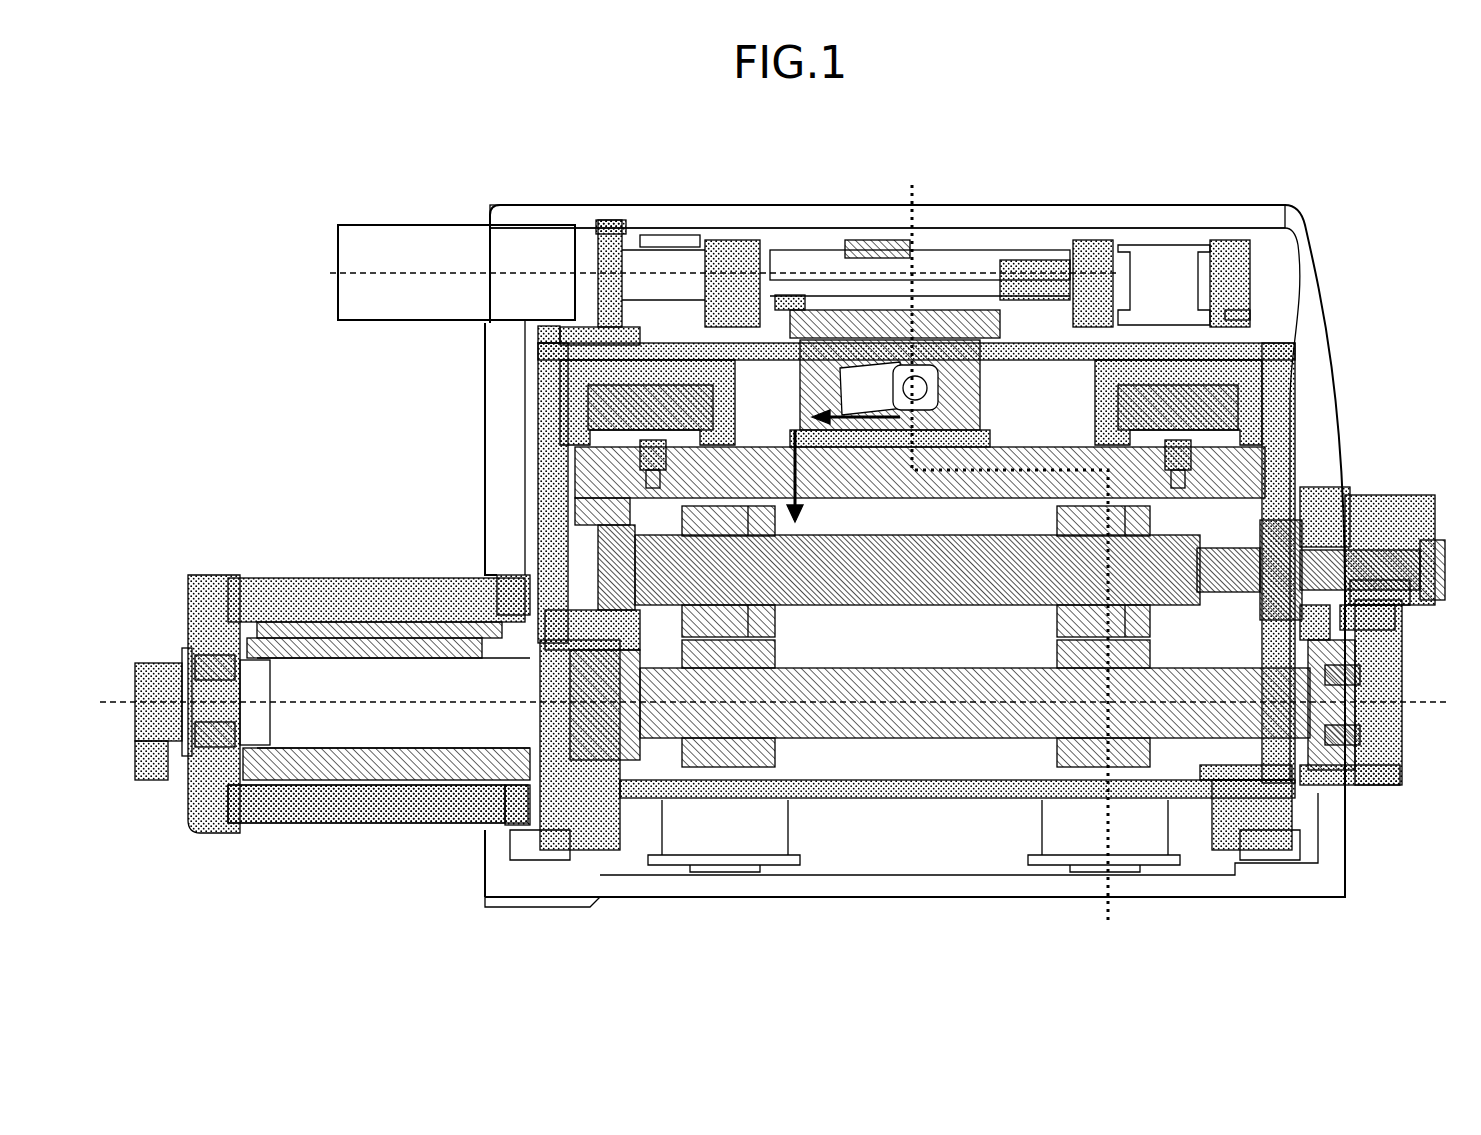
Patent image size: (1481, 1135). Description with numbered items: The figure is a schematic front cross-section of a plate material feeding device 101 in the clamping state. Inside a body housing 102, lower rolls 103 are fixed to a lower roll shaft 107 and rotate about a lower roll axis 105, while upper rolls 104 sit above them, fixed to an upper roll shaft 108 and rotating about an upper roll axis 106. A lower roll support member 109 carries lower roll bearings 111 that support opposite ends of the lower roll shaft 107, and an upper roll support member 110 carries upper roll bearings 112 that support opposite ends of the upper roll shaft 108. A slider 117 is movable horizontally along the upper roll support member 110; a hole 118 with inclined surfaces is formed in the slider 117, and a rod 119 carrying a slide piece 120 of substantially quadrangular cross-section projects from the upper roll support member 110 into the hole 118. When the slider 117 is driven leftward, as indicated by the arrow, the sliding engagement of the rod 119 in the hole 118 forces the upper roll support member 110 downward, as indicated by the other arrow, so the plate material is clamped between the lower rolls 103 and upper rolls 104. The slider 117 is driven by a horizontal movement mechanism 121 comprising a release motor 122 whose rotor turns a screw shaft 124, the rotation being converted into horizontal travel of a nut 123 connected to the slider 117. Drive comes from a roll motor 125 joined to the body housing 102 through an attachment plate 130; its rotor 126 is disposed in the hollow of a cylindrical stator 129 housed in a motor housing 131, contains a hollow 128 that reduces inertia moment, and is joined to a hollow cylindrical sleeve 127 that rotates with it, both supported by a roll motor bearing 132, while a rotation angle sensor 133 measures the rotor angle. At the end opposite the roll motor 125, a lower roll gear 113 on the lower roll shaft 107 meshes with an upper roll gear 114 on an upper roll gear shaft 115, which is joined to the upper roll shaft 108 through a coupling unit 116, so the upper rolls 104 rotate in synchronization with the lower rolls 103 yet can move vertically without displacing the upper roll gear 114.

The plate material feeding device 101 is at (1112, 182).
The body housing 102 is at (1128, 218).
The lower rolls 103 is at (1130, 770).
The upper rolls 104 is at (1195, 425).
The lower roll axis 105 is at (865, 705).
The upper roll axis 106 is at (1150, 400).
The lower roll shaft 107 is at (575, 800).
The upper roll shaft 108 is at (1238, 470).
The lower roll support member 109 is at (995, 785).
The upper roll support member 110 is at (1130, 470).
The lower roll bearings 111 is at (605, 785).
The upper roll bearings 112 is at (605, 535).
The lower roll gear 113 is at (1345, 780).
The upper roll gear 114 is at (1375, 598).
The upper roll gear shaft 115 is at (1360, 625).
The coupling unit 116 is at (1380, 490).
The slider 117 is at (880, 365).
The hole 118 is at (918, 385).
The rod 119 is at (915, 255).
The slide piece 120 is at (1000, 272).
The horizontal movement mechanism 121 is at (733, 238).
The release motor 122 is at (415, 245).
The nut 123 is at (878, 250).
The screw shaft 124 is at (1000, 245).
The roll motor 125 is at (290, 563).
The rotor 126 is at (450, 650).
The sleeve 127 is at (358, 638).
The hollow 128 is at (405, 722).
The stator 129 is at (280, 810).
The attachment plate 130 is at (510, 815).
The motor housing 131 is at (205, 820).
The roll motor bearing 132 is at (233, 615).
The rotation angle sensor 133 is at (160, 690).